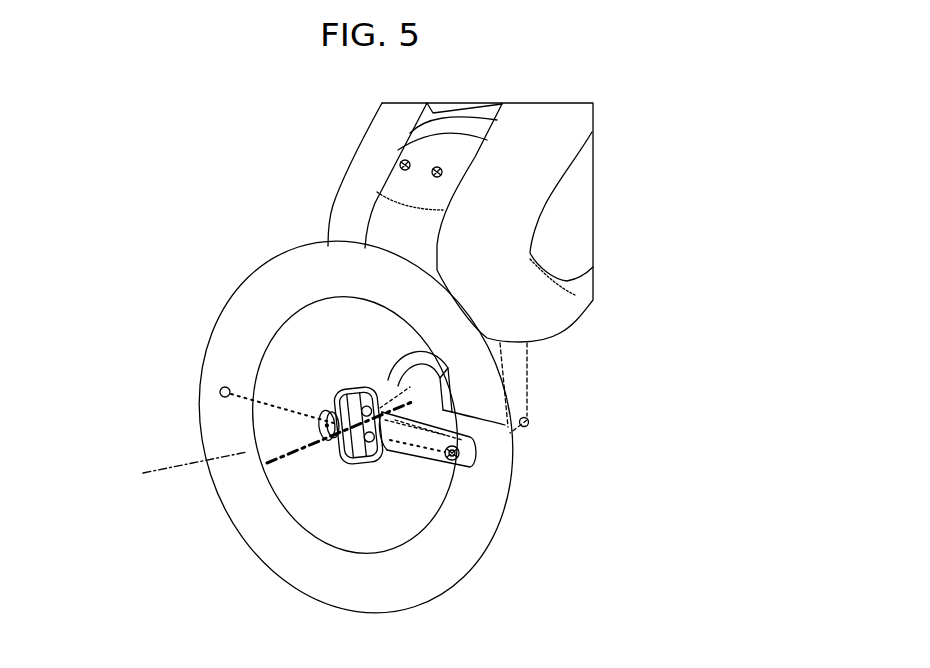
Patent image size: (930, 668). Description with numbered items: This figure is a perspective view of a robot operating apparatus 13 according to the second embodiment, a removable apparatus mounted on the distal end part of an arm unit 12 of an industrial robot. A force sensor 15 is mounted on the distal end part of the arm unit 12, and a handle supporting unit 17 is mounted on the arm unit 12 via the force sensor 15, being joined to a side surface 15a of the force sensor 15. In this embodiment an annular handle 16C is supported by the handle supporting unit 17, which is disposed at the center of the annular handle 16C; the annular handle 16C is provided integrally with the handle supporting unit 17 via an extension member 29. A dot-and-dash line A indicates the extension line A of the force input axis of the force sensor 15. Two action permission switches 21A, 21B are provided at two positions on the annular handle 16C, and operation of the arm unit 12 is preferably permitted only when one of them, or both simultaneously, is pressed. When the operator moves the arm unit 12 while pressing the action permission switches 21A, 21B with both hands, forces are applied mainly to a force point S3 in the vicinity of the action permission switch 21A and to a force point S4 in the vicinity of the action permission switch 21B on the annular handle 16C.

The arm unit 12 is at (372, 148).
The robot operating apparatus 13 is at (251, 255).
The force sensor 15 is at (440, 362).
The side surface 15a is at (528, 418).
The annular handle 16C is at (262, 516).
The handle supporting unit 17 is at (370, 392).
The action permission switch 21A is at (455, 490).
The action permission switch 21B is at (220, 393).
The extension member 29 is at (402, 455).
The extension line A is at (269, 444).
The force point S3 is at (475, 448).
The force point S4 is at (224, 387).